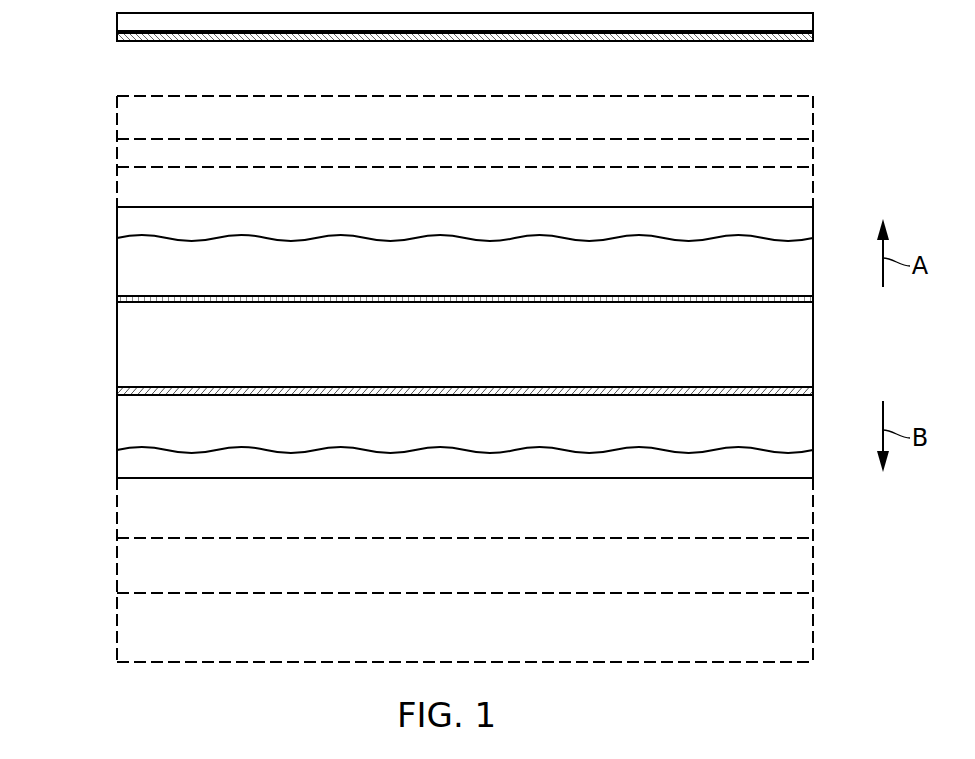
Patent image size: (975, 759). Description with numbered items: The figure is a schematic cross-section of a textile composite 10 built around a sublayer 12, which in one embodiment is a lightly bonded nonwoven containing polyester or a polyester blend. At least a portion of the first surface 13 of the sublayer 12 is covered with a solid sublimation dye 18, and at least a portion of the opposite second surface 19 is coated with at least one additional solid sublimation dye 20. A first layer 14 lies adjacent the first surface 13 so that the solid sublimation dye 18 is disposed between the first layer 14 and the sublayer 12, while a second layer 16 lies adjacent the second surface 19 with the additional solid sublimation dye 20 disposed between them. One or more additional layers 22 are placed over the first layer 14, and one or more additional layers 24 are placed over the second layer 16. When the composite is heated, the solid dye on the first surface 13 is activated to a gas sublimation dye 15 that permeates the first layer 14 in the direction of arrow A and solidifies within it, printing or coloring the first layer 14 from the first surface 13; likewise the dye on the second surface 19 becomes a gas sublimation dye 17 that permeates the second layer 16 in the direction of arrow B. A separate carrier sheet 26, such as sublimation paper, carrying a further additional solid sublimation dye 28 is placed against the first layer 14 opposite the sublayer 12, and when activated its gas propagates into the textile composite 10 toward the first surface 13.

The textile composite 10 is at (77, 96).
The sublayer 12 is at (813, 345).
The first surface 13 is at (317, 300).
The first layer 14 is at (813, 263).
The gas sublimation dye 15 is at (140, 238).
The second layer 16 is at (813, 422).
The gas sublimation dye 17 is at (517, 450).
The solid sublimation dye 18 is at (813, 298).
The second surface 19 is at (133, 388).
The additional solid sublimation dye 20 is at (813, 390).
The additional layers 22 is at (815, 118).
The additional layers 24 is at (815, 523).
The carrier sheet 26 is at (813, 22).
The additional solid sublimation dye 28 is at (813, 36).